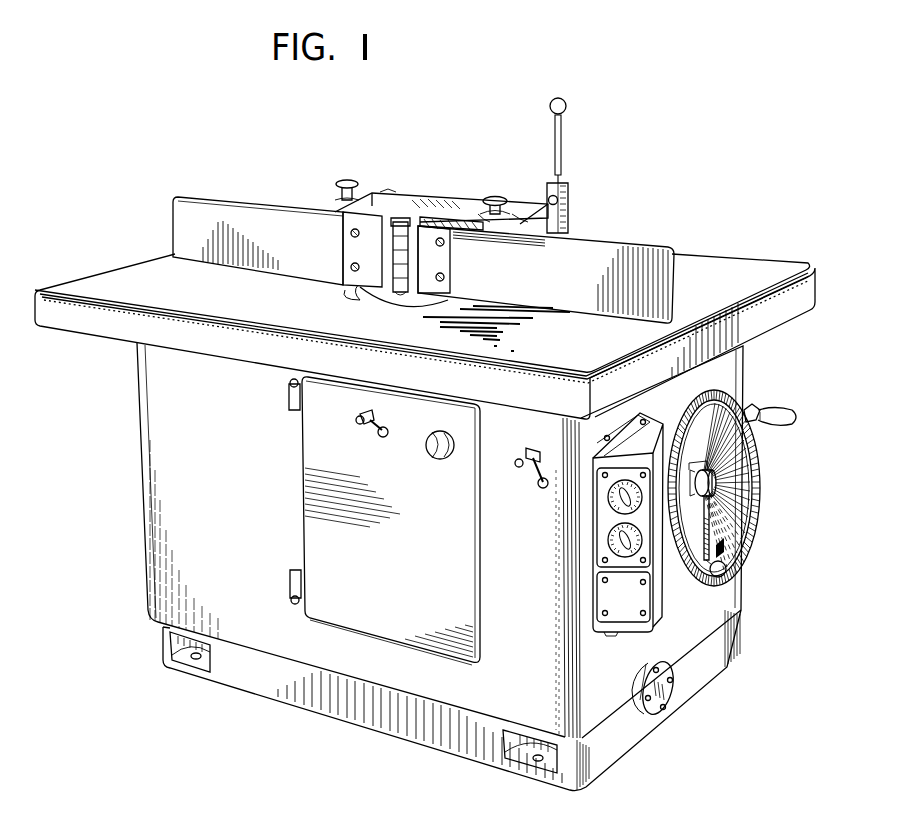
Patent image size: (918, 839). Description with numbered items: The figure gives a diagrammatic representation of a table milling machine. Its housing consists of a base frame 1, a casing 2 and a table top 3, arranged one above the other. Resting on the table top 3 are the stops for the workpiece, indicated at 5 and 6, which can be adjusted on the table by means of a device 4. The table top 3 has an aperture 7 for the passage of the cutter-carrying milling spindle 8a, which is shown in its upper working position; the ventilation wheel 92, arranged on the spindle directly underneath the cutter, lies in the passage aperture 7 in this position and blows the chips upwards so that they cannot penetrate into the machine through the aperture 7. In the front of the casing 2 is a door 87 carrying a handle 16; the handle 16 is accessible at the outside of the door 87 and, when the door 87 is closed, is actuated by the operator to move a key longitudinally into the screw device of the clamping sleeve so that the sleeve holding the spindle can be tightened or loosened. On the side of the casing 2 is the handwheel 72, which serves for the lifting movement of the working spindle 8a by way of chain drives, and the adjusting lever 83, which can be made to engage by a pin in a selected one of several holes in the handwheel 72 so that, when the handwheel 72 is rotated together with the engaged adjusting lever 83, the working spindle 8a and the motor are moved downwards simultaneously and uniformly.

The base frame 1 is at (367, 723).
The casing 2 is at (167, 452).
The table top 3 is at (735, 275).
The device 4 is at (476, 205).
The stop 5 is at (183, 226).
The stop 6 is at (570, 245).
The aperture 7 is at (357, 300).
The milling spindle 8a is at (402, 216).
The handle 16 is at (378, 440).
The handwheel 72 is at (760, 453).
The adjusting lever 83 is at (707, 523).
The door 87 is at (467, 591).
The ventilation wheel 92 is at (392, 302).